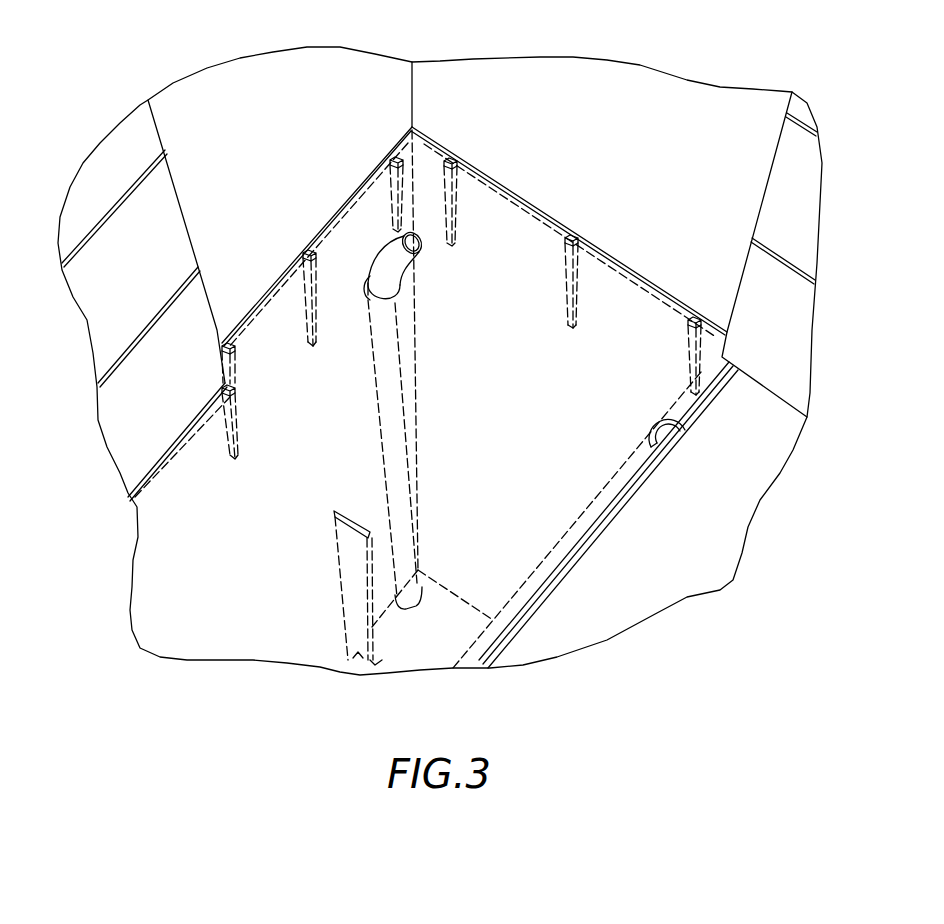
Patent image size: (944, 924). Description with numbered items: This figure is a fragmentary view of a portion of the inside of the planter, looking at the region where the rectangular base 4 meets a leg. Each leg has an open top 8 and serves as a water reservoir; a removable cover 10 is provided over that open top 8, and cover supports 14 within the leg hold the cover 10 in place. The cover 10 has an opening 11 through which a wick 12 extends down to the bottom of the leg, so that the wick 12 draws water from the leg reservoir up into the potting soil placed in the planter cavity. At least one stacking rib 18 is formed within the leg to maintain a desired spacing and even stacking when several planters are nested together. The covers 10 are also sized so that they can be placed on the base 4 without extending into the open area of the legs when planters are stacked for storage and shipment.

The base 4 is at (742, 507).
The open top 8 is at (657, 425).
The removable cover 10 is at (598, 477).
The opening 11 is at (400, 297).
The wick 12 is at (405, 267).
The cover support 14 is at (466, 162).
The stacking rib 18 is at (347, 548).